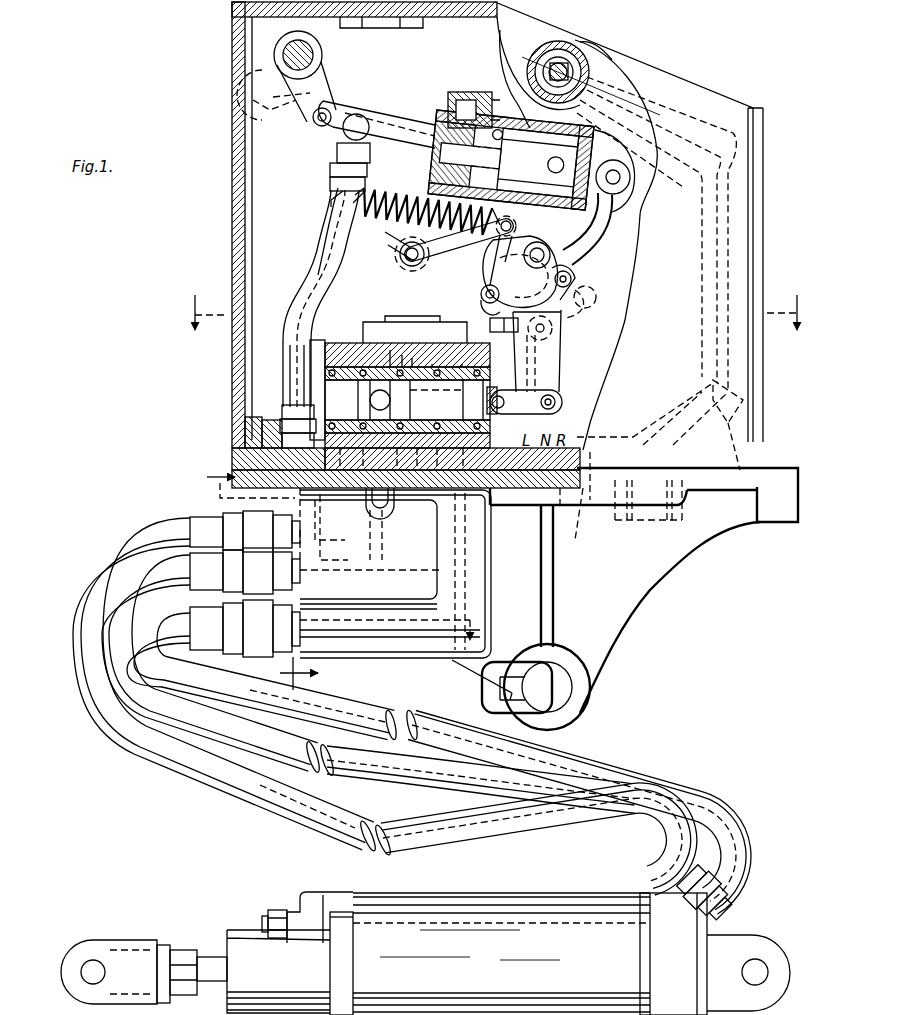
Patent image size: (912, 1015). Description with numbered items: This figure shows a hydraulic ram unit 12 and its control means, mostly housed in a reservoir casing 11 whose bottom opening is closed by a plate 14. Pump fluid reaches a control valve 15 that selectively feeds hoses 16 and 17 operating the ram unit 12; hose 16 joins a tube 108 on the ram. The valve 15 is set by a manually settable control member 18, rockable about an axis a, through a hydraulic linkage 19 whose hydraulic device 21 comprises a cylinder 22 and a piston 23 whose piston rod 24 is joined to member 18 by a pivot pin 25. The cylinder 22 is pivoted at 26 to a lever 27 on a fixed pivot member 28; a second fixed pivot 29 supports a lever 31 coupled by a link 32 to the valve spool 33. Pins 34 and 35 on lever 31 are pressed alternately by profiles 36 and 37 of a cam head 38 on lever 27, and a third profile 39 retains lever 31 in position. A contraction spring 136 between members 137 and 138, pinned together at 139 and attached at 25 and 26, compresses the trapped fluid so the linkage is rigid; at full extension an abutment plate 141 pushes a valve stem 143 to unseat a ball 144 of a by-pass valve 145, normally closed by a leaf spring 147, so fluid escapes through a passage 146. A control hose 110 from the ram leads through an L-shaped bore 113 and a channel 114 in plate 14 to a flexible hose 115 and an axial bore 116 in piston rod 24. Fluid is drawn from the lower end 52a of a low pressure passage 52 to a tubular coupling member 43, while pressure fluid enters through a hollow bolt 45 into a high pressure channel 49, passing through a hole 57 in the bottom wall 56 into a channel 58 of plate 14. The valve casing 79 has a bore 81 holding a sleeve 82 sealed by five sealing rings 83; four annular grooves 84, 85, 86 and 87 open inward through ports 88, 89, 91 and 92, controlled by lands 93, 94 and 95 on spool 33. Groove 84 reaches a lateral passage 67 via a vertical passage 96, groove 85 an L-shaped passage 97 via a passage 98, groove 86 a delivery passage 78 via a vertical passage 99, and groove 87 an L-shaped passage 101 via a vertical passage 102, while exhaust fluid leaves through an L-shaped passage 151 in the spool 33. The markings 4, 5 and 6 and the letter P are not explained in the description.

The axis a is at (312, 56).
The section line 4- 4 is at (255, 579).
The section line 5- 5 is at (496, 312).
The section line 6- 6 is at (522, 56).
The reservoir casing 11 is at (768, 146).
The hydraulic ram unit 12 is at (520, 890).
The plate 14 is at (773, 468).
The control valve 15 is at (345, 340).
The hose 16 is at (412, 712).
The hose 17 is at (383, 853).
The manually settable control member 18 is at (330, 92).
The hydraulic linkage 19 is at (440, 82).
The hydraulic device 21 is at (507, 98).
The cylinder 22 is at (540, 126).
The piston 23 is at (440, 205).
The piston rod 24 is at (380, 125).
The pivot pin 25 is at (335, 112).
The pivotal connection 26 is at (620, 180).
The lever 27 is at (605, 248).
The fixed pivot member 28 is at (550, 257).
The second fixed pivot 29 is at (553, 329).
The lever 31 is at (562, 354).
The link 32 is at (560, 396).
The spool 33 is at (490, 394).
The pin 34 is at (486, 294).
The pin 35 is at (573, 277).
The cam profile 36 is at (505, 270).
The cam profile 37 is at (580, 309).
The cam head 38 is at (520, 271).
The third cam profile 39 is at (482, 297).
The tubular coupling member 43 is at (576, 58).
The tubular bolt 45 is at (590, 76).
The high pressure channel 49 is at (683, 130).
The low pressure passage 52 is at (725, 118).
The lower end of low pressure passage 52a is at (728, 449).
The bottom wall 56 is at (590, 452).
The hole 57 is at (655, 430).
The channel 58 is at (560, 502).
The lateral passage 67 is at (341, 527).
The transverse fluid delivery passage 78 is at (383, 497).
The valve casing 79 is at (490, 360).
The cylindrical bore 81 is at (412, 358).
The sleeve 82 is at (402, 355).
The sealing annulus 83 is at (345, 380).
The annular groove 84 is at (352, 342).
The annular groove 85 is at (390, 350).
The annular groove 86 is at (432, 364).
The annular groove 87 is at (462, 364).
The port 88 is at (250, 421).
The port 89 is at (375, 408).
The port 91 is at (436, 404).
The port 92 is at (490, 421).
The land 93 is at (285, 395).
The land 94 is at (410, 400).
The land 95 is at (464, 400).
The vertical passage 96 is at (346, 459).
The L-shaped passage 97 is at (372, 548).
The passage 98 is at (384, 459).
The vertical passage 99 is at (436, 459).
The L-shaped passage 101 is at (488, 578).
The vertical passage 102 is at (488, 462).
The tube 108 is at (605, 896).
The control hose 110 is at (326, 778).
The L-shaped bore 113 is at (300, 520).
The channel 114 is at (240, 455).
The flexible hose 115 is at (298, 312).
The axial bore 116 is at (400, 130).
The contraction spring 136 is at (362, 180).
The member 137 is at (375, 238).
The member 138 is at (455, 255).
The pin 139 is at (418, 260).
The abutment plate 141 is at (455, 125).
The valve stem 143 is at (450, 165).
The ball 144 is at (538, 163).
The by-pass valve 145 is at (548, 163).
The passage 146 is at (462, 93).
The leaf spring 147 is at (535, 179).
The L-shaped passage 151 is at (407, 383).
The pin P is at (558, 403).